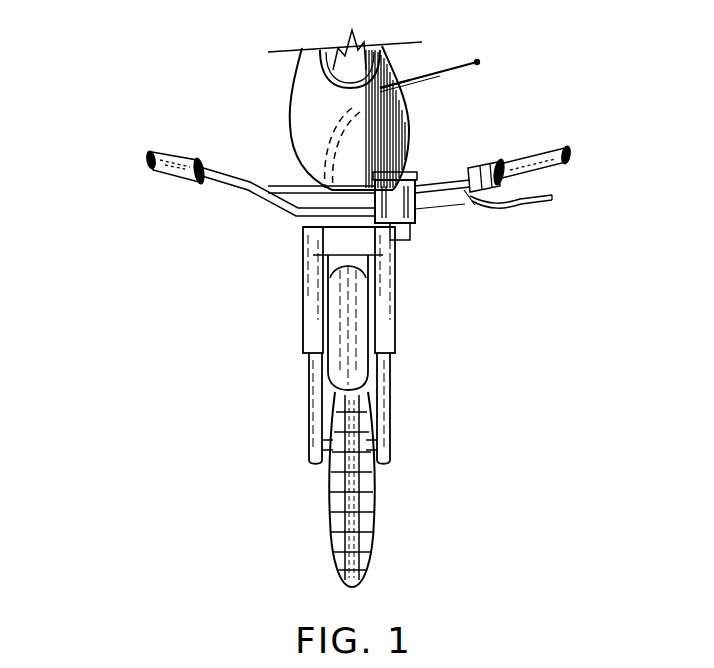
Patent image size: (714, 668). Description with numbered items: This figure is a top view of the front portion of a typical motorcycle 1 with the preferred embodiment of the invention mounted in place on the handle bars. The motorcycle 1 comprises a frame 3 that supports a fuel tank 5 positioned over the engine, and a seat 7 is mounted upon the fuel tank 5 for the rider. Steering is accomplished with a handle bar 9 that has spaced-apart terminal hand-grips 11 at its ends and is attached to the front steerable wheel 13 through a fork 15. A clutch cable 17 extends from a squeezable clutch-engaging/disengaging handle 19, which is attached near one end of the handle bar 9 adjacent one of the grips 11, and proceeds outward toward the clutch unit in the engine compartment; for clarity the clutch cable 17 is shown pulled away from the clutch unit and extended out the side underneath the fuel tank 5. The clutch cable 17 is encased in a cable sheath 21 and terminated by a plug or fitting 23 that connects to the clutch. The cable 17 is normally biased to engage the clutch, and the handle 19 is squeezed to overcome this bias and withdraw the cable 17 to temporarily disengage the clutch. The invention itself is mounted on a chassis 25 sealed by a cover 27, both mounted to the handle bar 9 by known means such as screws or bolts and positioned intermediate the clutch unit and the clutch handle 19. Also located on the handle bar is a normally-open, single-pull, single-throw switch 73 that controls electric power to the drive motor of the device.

The motorcycle 1 is at (309, 101).
The frame 3 is at (348, 188).
The fuel tank 5 is at (302, 117).
The seat 7 is at (337, 63).
The handle bar 9 is at (238, 185).
The hand-grips 11 is at (148, 160).
The front steerable wheel 13 is at (375, 545).
The fork 15 is at (305, 367).
The clutch cable 17 is at (475, 73).
The clutch-engaging/disengaging handle 19 is at (528, 202).
The cable sheath 21 is at (417, 88).
The plug or fitting 23 is at (480, 63).
The chassis 25 is at (436, 229).
The cover 27 is at (405, 222).
The switch 73 is at (478, 165).